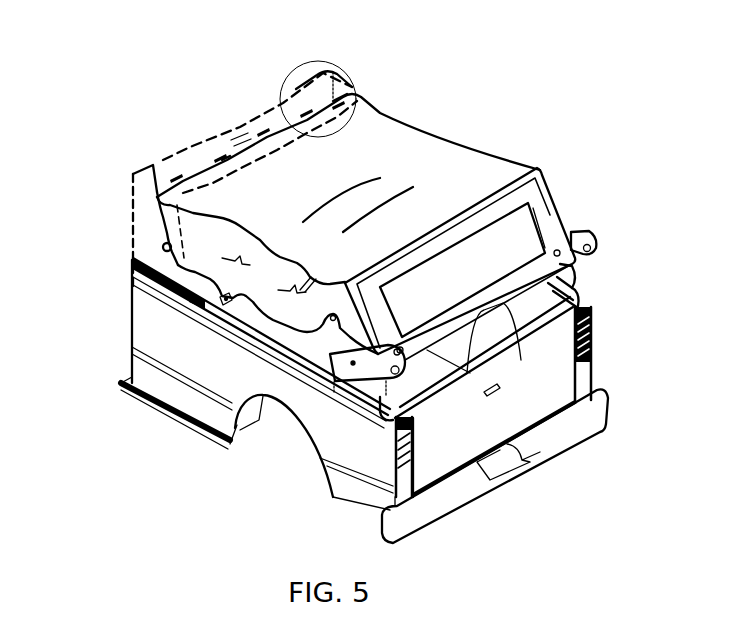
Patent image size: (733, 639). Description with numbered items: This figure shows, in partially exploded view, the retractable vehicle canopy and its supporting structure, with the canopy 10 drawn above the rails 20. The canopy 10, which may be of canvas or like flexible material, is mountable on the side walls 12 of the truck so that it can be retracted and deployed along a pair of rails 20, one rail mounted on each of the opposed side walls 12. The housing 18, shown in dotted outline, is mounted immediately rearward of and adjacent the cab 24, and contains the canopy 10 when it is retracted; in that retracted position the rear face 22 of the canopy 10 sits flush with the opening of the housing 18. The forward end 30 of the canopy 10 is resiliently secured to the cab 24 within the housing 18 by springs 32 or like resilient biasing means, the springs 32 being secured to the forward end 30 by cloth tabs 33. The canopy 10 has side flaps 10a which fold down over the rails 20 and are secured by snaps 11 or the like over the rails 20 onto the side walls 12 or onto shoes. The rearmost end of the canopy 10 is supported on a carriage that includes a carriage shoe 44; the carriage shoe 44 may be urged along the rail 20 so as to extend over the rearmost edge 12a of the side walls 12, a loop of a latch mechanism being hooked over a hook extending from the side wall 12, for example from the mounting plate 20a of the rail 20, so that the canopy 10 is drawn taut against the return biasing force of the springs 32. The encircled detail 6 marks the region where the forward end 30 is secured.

The detail circle 6 is at (339, 64).
The canopy 10 is at (417, 140).
The side flaps 10a is at (645, 208).
The snaps 11 is at (163, 245).
The side walls 12 is at (278, 372).
The rearmost edge 12a is at (413, 420).
The housing 18 is at (145, 211).
The rails 20 is at (212, 308).
The mounting plate 20a is at (372, 418).
The rear face 22 is at (538, 197).
The cab 24 is at (239, 130).
The forward end 30 is at (280, 128).
The springs 32 is at (302, 107).
The cloth tabs 33 is at (226, 162).
The carriage shoe 44 is at (352, 364).